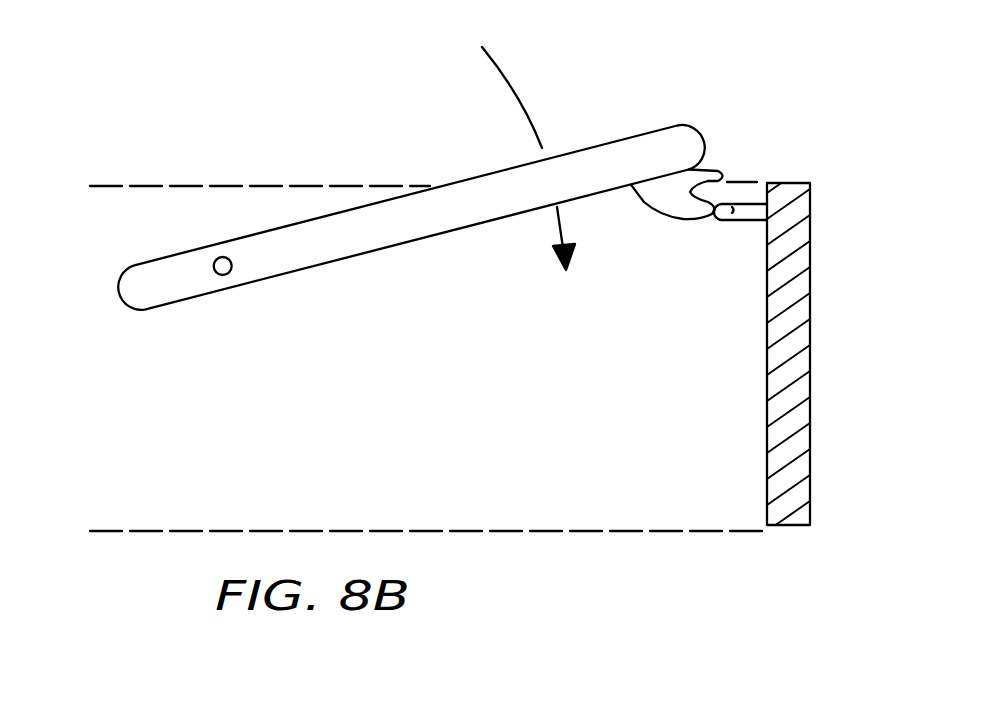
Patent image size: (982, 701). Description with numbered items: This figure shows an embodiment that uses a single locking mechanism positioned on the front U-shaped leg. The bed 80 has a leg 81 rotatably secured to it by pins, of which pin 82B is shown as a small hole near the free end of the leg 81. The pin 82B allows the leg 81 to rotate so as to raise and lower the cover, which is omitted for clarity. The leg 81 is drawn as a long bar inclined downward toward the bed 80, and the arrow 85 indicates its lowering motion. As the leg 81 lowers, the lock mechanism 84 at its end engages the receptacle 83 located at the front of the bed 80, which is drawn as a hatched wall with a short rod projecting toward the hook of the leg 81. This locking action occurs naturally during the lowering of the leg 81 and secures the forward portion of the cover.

The bed 80 is at (788, 327).
The leg 81 is at (460, 193).
The pin 82B is at (228, 272).
The receptacle 83 is at (727, 222).
The lock mechanism 84 is at (710, 175).
The arrow 85 is at (558, 230).